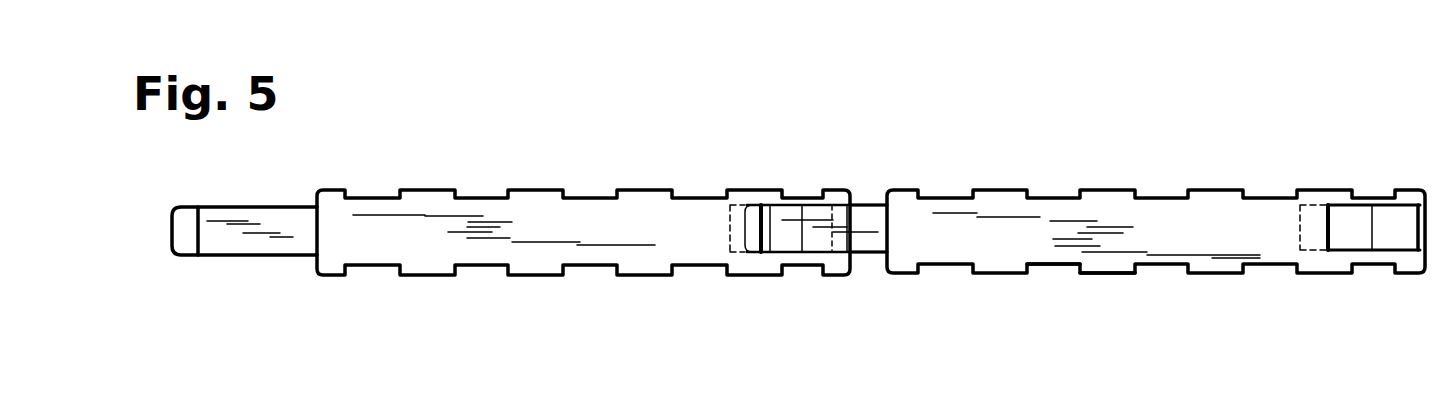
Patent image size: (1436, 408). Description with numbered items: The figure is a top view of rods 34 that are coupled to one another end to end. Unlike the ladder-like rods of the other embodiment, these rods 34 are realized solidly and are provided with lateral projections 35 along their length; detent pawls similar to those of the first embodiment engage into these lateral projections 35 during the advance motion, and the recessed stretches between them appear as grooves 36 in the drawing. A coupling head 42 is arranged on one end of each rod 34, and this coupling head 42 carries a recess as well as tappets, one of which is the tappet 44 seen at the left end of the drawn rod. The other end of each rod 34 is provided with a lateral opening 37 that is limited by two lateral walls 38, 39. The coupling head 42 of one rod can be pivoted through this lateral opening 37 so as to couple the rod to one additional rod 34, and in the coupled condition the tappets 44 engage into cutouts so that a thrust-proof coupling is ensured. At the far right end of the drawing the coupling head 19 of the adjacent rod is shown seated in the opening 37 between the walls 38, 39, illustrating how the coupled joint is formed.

The rod 34 is at (600, 156).
The lateral projection 35 is at (1113, 274).
The groove 36 is at (1053, 266).
The lateral opening 37 is at (1348, 230).
The lateral wall 38 is at (1322, 226).
The lateral wall 39 is at (1367, 220).
The coupling head 19 is at (1405, 227).
The coupling head 42 is at (258, 235).
The tappet 44 is at (185, 238).